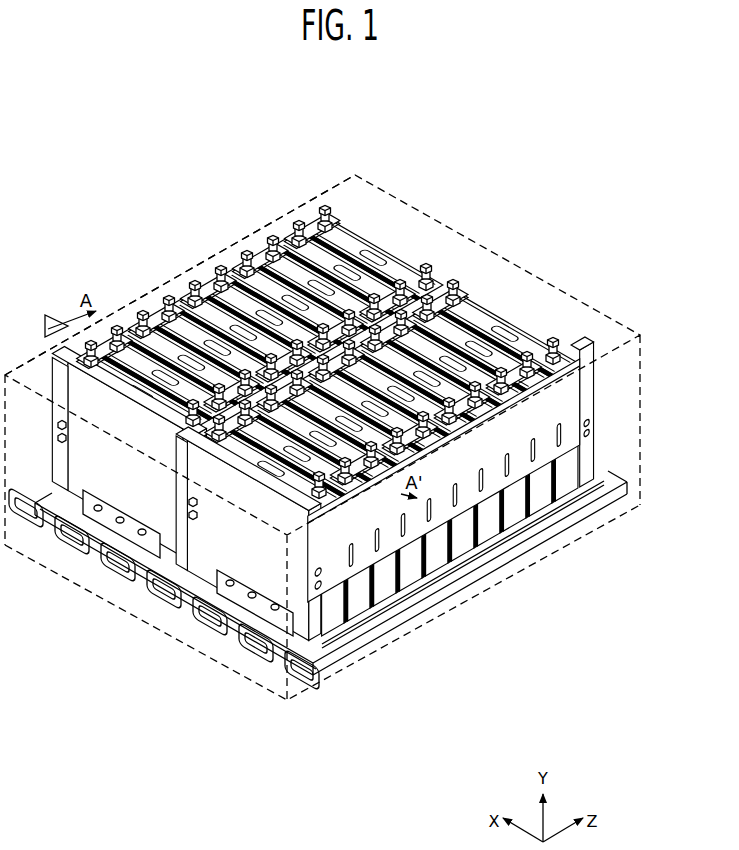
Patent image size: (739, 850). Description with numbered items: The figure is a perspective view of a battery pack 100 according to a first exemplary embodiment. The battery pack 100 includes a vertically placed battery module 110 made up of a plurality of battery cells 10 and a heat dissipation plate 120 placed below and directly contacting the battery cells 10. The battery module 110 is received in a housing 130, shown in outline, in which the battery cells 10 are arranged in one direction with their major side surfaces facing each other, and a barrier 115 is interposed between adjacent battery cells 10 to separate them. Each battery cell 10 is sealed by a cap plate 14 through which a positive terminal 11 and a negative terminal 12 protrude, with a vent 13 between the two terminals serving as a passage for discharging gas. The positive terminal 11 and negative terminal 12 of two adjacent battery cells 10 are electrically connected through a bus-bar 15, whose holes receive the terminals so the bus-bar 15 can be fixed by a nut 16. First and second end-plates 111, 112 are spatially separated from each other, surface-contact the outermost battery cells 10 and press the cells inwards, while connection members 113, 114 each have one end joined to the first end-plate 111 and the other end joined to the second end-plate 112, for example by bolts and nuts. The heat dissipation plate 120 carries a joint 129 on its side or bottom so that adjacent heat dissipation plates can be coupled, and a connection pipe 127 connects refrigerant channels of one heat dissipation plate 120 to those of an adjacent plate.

The battery cell 10 is at (496, 525).
The positive terminal 11 is at (329, 205).
The negative terminal 12 is at (425, 264).
The vent 13 is at (385, 240).
The cap plate 14 is at (350, 232).
The bus-bar 15 is at (318, 222).
The nut 16 is at (433, 272).
The battery pack 100 is at (98, 89).
The battery module 110 is at (525, 314).
The first end-plate 111 is at (313, 610).
The second end-plate 112 is at (590, 380).
The connection member 113 is at (585, 438).
The connection member 114 is at (286, 616).
The barrier 115 is at (569, 495).
The heat dissipation plate 120 is at (440, 608).
The connection pipe 127 is at (254, 652).
The joint 129 is at (473, 575).
The housing 130 is at (151, 284).